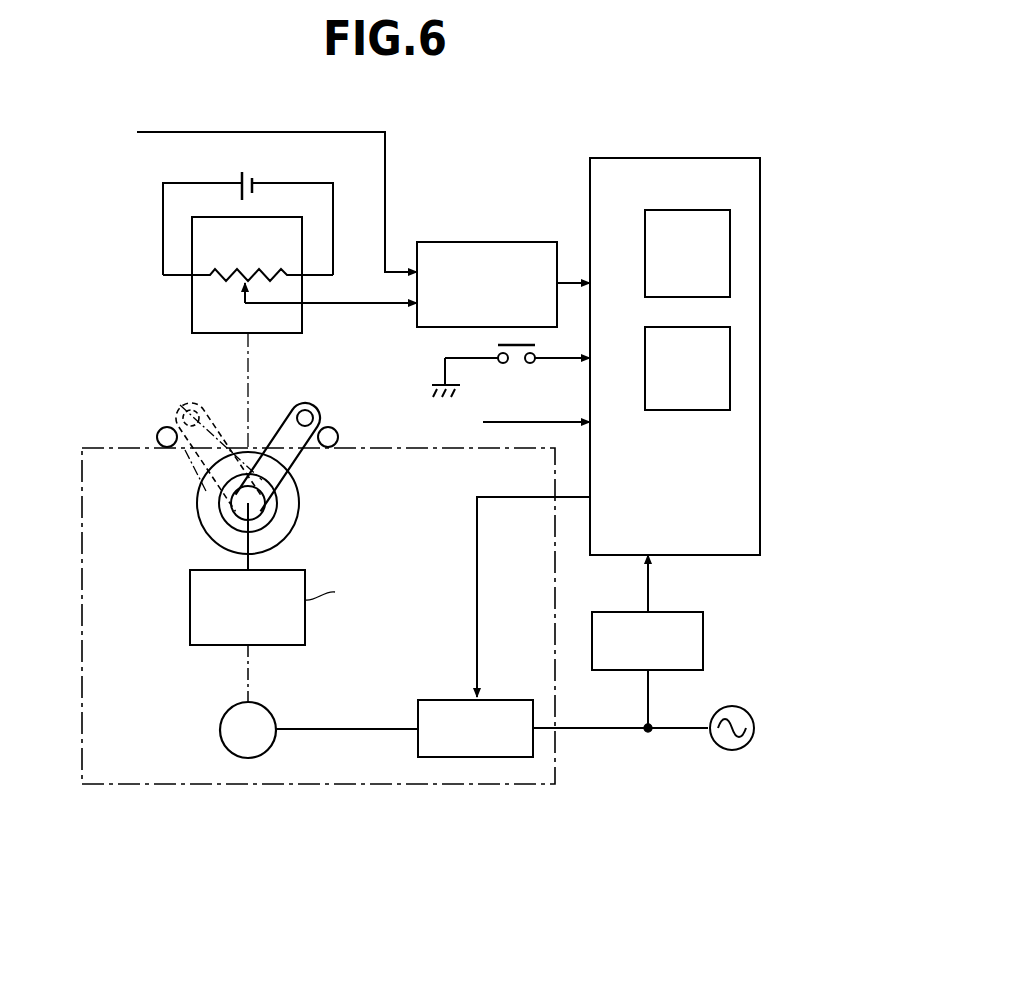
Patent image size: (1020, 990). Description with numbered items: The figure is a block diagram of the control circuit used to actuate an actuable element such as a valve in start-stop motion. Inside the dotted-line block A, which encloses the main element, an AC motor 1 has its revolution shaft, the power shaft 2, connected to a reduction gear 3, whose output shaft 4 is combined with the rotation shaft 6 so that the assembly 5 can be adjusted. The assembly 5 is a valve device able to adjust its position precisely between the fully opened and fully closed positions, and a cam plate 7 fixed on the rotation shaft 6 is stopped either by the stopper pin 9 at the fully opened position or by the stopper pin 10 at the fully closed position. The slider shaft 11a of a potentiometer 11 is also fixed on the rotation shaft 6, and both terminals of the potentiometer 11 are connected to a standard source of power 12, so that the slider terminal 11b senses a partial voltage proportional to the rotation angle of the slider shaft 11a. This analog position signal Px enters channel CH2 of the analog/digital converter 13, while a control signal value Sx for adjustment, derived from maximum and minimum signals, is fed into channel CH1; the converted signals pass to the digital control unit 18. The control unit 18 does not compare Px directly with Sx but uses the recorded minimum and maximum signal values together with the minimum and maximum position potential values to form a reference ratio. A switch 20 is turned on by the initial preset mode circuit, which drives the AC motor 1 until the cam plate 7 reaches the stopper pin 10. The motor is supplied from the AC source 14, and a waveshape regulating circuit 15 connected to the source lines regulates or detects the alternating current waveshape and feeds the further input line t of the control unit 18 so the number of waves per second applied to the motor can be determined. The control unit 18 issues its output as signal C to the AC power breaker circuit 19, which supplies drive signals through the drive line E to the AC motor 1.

The AC motor 1 is at (220, 732).
The power shaft 2 is at (240, 668).
The reduction gear 3 is at (190, 617).
The output shaft 4 is at (250, 540).
The assembly 5 is at (300, 517).
The rotation shaft 6 is at (220, 506).
The cam plate 7 is at (281, 419).
The stopper pin 9 is at (338, 436).
The stopper pin 10 is at (157, 436).
The potentiometer 11 is at (192, 300).
The slider shaft 11a is at (250, 350).
The slider terminal 11b is at (222, 333).
The standard source of power 12 is at (242, 174).
The analog/digital converter 13 is at (497, 242).
The AC source 14 is at (716, 746).
The waveshape regulating circuit 15 is at (703, 628).
The control unit 18 is at (760, 415).
The AC power breaker circuit 19 is at (437, 757).
The switch 20 is at (517, 348).
The main element block A is at (83, 667).
The control signal C is at (477, 580).
The drive line E is at (348, 725).
The control signal value Sx is at (386, 178).
The position potential value Px is at (340, 306).
The input line t is at (652, 585).